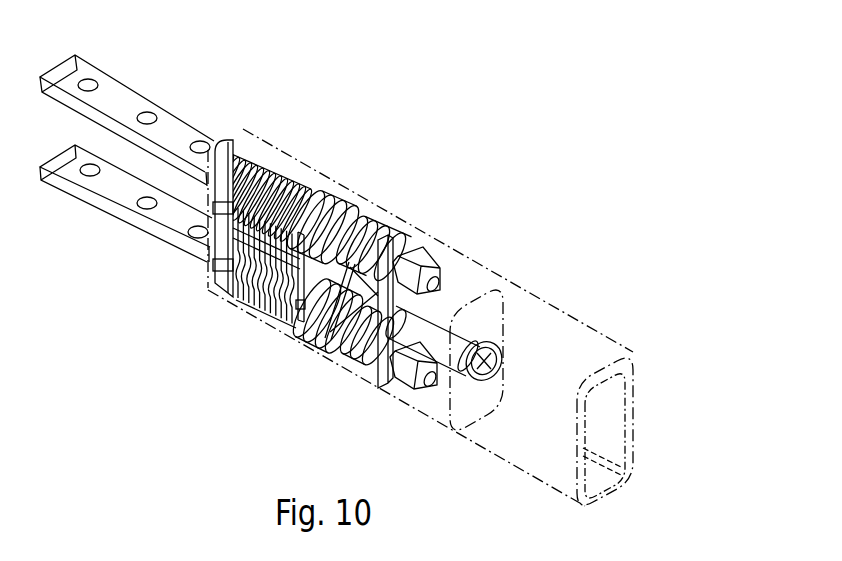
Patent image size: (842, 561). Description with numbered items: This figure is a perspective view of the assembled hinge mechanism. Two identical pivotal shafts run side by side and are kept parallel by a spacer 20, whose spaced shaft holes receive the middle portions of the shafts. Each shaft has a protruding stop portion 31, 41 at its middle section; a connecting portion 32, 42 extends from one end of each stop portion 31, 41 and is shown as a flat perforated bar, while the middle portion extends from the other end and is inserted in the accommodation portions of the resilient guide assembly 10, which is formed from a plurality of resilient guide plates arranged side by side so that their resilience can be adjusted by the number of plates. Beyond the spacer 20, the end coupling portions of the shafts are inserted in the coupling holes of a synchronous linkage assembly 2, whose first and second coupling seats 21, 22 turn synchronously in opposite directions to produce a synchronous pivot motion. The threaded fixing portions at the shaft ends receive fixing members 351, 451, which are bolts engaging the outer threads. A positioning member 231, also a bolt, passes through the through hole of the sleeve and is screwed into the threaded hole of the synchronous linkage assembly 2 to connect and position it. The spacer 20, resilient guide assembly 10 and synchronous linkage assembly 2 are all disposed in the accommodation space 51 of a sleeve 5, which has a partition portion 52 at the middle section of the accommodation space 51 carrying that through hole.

The resilient guide assembly 10 is at (304, 160).
The synchronous linkage assembly 2 is at (385, 206).
The spacer 20 is at (212, 278).
The first coupling seat 21 is at (410, 242).
The second coupling seat 22 is at (383, 388).
The stop portion 31 is at (236, 140).
The connecting portion 32 is at (113, 88).
The stop portion 41 is at (205, 255).
The connecting portion 42 is at (107, 190).
The fixing member 351 is at (446, 262).
The fixing member 451 is at (420, 388).
The positioning member 231 is at (490, 344).
The sleeve 5 is at (500, 463).
The accommodation space 51 is at (612, 388).
The partition portion 52 is at (463, 427).